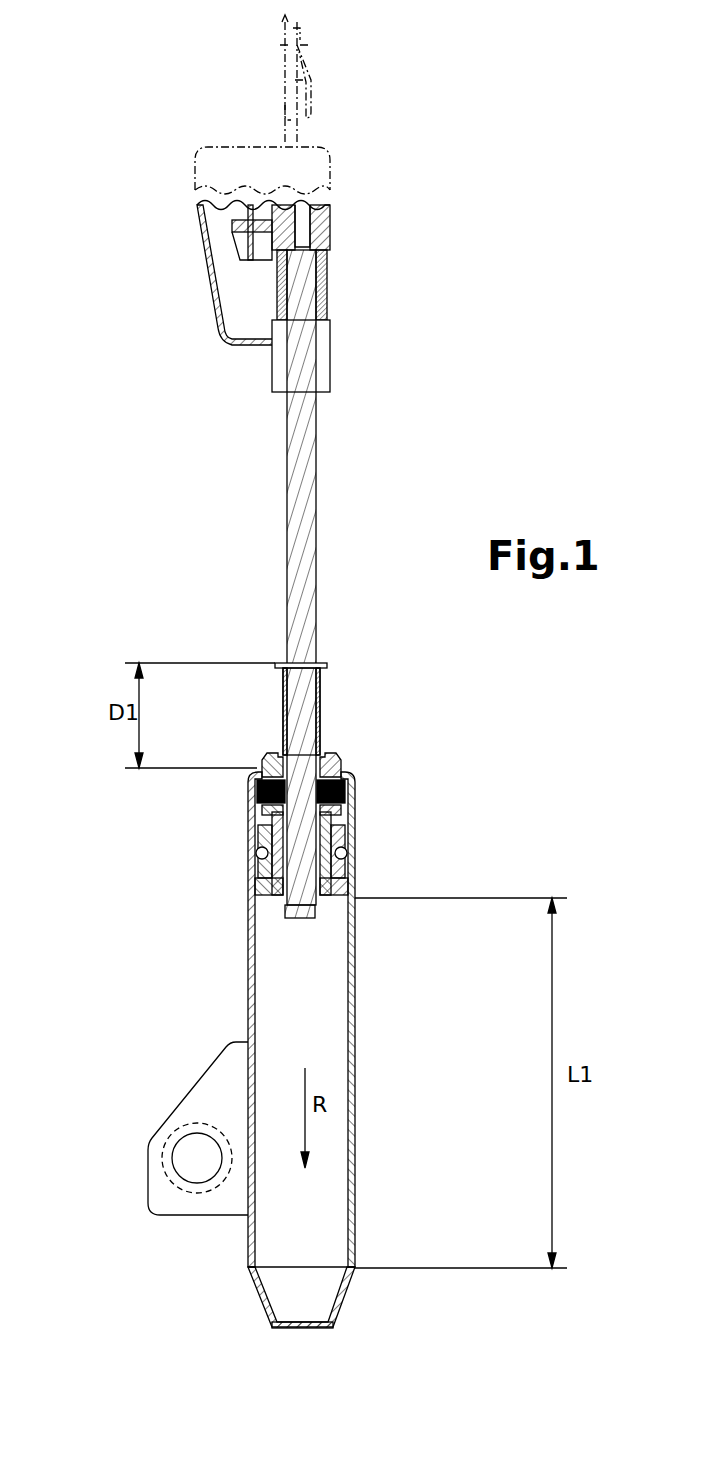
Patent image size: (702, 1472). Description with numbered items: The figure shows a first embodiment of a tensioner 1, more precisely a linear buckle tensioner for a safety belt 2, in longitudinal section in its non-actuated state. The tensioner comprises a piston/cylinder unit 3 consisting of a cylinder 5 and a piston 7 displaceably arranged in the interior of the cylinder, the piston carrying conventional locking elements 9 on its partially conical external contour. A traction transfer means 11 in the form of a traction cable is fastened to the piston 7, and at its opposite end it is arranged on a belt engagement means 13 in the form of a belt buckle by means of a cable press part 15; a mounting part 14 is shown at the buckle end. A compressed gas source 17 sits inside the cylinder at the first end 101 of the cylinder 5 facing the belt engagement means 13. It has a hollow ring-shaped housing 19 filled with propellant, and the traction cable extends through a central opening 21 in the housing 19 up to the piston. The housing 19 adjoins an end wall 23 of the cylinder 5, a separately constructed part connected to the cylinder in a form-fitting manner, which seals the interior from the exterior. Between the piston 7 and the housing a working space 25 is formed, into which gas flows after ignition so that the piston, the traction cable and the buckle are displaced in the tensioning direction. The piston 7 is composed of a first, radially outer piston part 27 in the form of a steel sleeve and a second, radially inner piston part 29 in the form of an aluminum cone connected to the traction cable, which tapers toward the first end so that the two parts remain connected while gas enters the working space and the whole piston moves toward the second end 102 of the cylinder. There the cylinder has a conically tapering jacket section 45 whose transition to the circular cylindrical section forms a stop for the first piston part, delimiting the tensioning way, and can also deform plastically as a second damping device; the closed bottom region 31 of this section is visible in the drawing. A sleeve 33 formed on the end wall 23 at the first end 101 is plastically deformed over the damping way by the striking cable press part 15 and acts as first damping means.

The tensioner 1 is at (288, 1067).
The safety belt 2 is at (312, 42).
The piston/cylinder unit 3 is at (302, 851).
The cylinder 5 is at (355, 998).
The piston 7 is at (345, 887).
The locking elements 9 is at (345, 857).
The traction transfer means 11 is at (300, 478).
The belt engagement means 13 is at (325, 232).
The mounting bracket 14 is at (198, 287).
The cable press part 15 is at (325, 372).
The compressed gas source 17 is at (342, 792).
The housing 19 is at (257, 797).
The central opening 21 is at (314, 776).
The end wall 23 is at (265, 772).
The working space 25 is at (345, 818).
The first piston part 27 is at (260, 882).
The second piston part 29 is at (283, 908).
The bottom plate 31 is at (276, 1327).
The sleeve 33 is at (322, 685).
The jacket section 45 is at (348, 1302).
The first end 101 is at (244, 753).
The second end 102 is at (212, 1253).